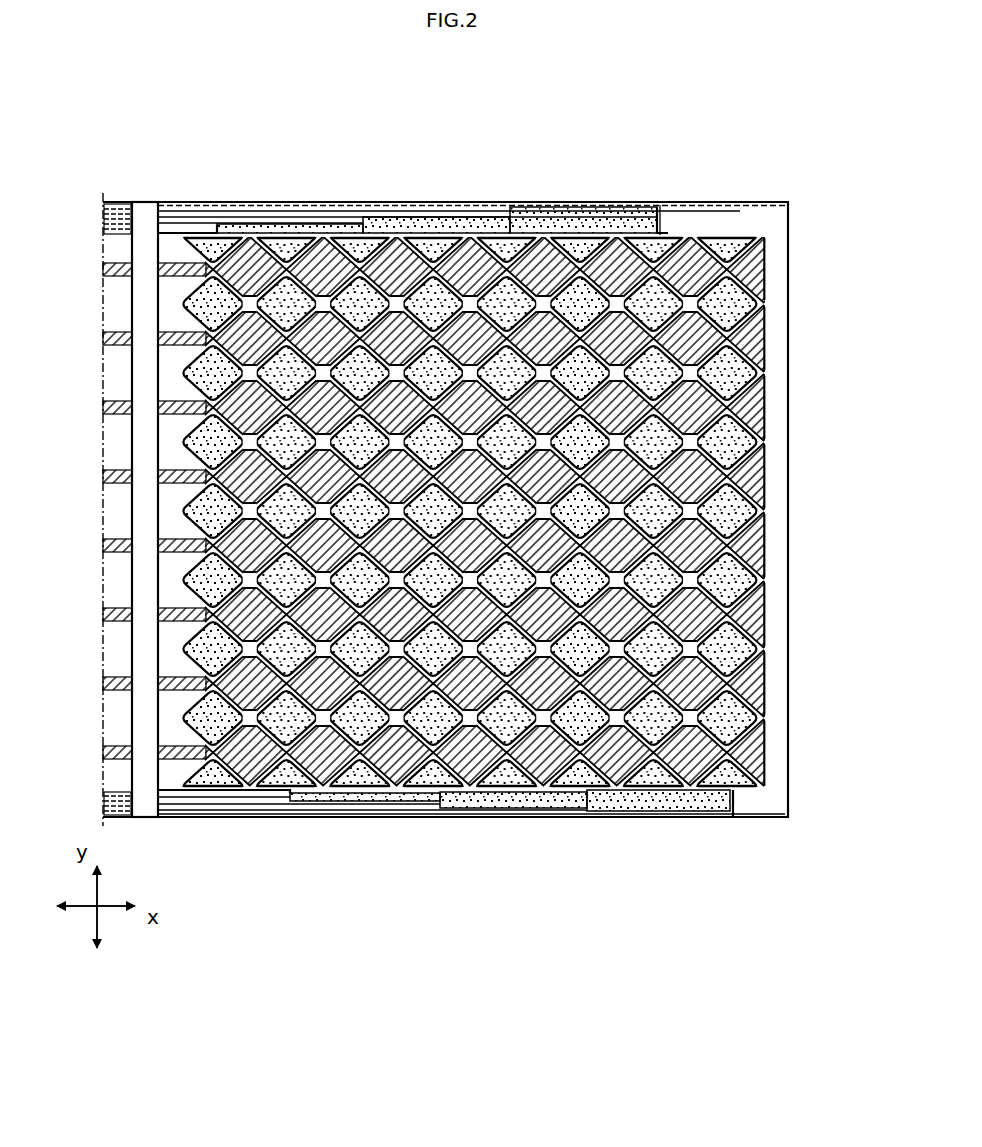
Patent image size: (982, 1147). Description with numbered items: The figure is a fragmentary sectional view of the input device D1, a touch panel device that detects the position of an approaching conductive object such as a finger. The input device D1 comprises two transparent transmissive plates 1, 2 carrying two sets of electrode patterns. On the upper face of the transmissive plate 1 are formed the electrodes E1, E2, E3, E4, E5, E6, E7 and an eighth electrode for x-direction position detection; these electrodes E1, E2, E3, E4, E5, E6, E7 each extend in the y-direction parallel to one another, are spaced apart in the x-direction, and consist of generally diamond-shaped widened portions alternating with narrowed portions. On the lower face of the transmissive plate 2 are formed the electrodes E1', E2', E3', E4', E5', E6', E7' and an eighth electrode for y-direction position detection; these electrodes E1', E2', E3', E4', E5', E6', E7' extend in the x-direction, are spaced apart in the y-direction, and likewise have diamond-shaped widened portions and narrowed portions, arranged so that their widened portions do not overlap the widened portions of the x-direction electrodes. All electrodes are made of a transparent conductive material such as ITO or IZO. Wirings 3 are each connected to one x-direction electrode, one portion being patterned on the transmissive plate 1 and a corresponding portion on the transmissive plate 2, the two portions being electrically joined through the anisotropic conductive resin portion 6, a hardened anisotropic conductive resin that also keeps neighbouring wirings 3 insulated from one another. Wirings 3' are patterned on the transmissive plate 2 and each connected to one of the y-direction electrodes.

The input device D1 is at (106, 188).
The transmissive plate 1 is at (778, 222).
The transmissive plate 2 is at (102, 296).
The wirings 3 is at (417, 520).
The wirings 3' is at (127, 511).
The anisotropic conductive resin portion 6 is at (146, 578).
The electrode for x-direction position detection E1 is at (226, 481).
The electrode for x-direction position detection E2 is at (290, 481).
The electrode for x-direction position detection E3 is at (359, 481).
The electrode for x-direction position detection E4 is at (433, 481).
The electrode for x-direction position detection E5 is at (517, 481).
The electrode for x-direction position detection E6 is at (584, 481).
The electrode for x-direction position detection E7 is at (661, 481).
The electrode for y-direction position detection E1' is at (489, 270).
The electrode for y-direction position detection E2' is at (489, 340).
The electrode for y-direction position detection E3' is at (489, 408).
The electrode for y-direction position detection E4' is at (489, 477).
The electrode for y-direction position detection E5' is at (489, 547).
The electrode for y-direction position detection E6' is at (489, 615).
The electrode for y-direction position detection E7' is at (489, 684).